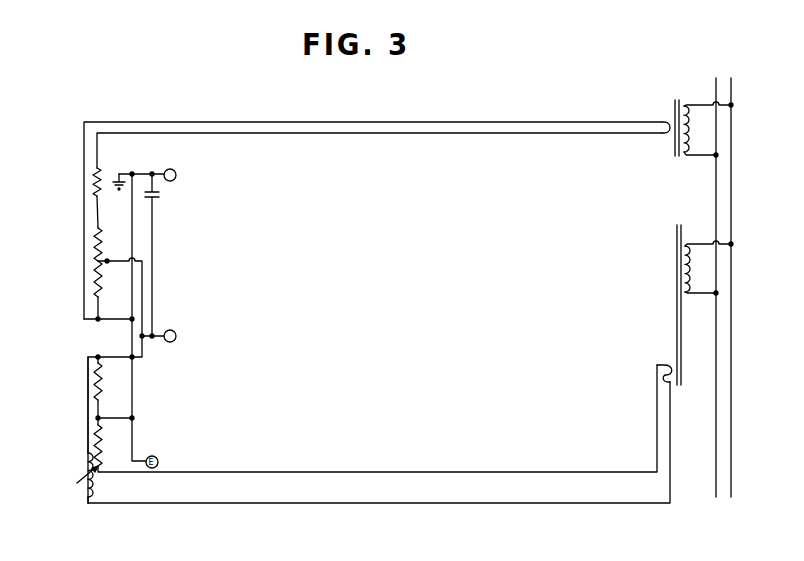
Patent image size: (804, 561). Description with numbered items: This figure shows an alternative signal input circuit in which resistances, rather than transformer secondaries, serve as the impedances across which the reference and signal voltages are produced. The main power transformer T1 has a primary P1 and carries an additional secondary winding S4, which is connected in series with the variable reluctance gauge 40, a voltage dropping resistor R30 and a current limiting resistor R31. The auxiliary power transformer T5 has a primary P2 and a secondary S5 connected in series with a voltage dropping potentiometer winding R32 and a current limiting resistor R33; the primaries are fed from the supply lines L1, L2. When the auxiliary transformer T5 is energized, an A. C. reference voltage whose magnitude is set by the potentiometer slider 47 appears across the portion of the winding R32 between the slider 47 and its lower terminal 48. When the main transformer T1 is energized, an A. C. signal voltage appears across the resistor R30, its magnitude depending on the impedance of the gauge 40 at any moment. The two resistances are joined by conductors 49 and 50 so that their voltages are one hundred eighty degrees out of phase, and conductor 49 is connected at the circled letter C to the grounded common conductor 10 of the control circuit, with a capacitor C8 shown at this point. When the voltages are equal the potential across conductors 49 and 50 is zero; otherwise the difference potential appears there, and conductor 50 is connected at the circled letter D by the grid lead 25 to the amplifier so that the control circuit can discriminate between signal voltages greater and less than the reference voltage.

The grounded common conductor 10 is at (135, 171).
The current limiting resistor R33 is at (93, 183).
The capacitor C8 is at (160, 196).
The voltage dropping potentiometer winding R32 is at (89, 274).
The potentiometer slider 47 is at (108, 259).
The lower terminal 48 is at (101, 291).
The conductor 50 is at (143, 297).
The conductor 49 is at (131, 333).
The grid lead 25 is at (164, 334).
The voltage dropping resistor R30 is at (103, 392).
The current limiting resistor R31 is at (102, 452).
The variable reluctance gauge 40 is at (85, 488).
The supply line L2 is at (711, 278).
The supply line L1 is at (735, 278).
The secondary S5 is at (665, 121).
The auxiliary power transformer T5 is at (676, 100).
The primary winding P2 is at (691, 132).
The power transformer T1 is at (683, 310).
The primary winding P1 is at (692, 276).
The additional secondary winding S4 is at (663, 365).